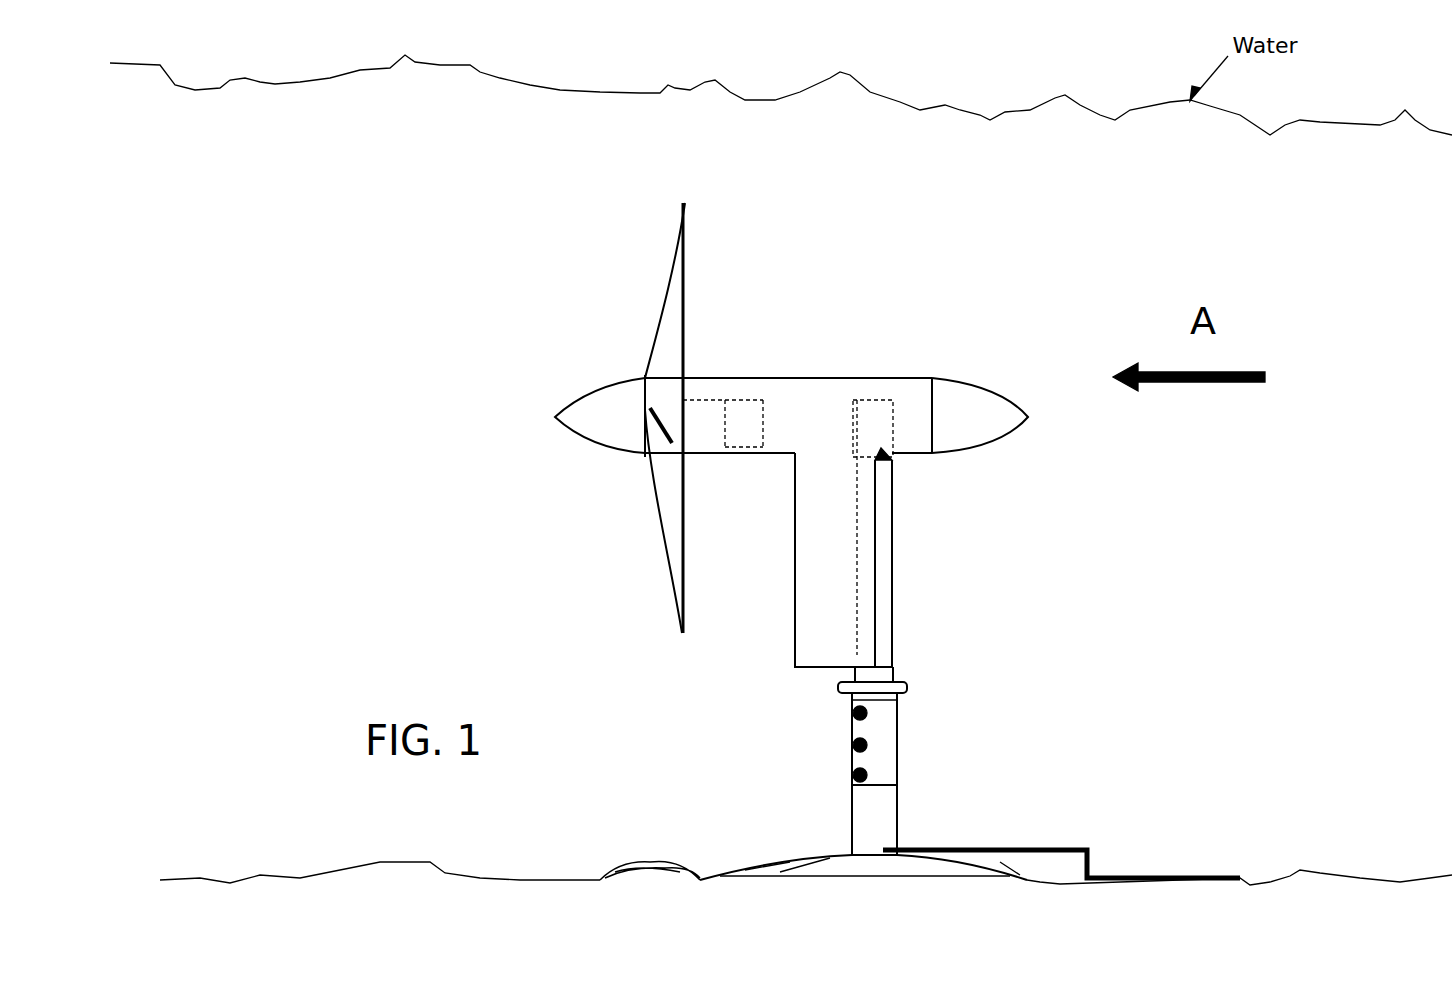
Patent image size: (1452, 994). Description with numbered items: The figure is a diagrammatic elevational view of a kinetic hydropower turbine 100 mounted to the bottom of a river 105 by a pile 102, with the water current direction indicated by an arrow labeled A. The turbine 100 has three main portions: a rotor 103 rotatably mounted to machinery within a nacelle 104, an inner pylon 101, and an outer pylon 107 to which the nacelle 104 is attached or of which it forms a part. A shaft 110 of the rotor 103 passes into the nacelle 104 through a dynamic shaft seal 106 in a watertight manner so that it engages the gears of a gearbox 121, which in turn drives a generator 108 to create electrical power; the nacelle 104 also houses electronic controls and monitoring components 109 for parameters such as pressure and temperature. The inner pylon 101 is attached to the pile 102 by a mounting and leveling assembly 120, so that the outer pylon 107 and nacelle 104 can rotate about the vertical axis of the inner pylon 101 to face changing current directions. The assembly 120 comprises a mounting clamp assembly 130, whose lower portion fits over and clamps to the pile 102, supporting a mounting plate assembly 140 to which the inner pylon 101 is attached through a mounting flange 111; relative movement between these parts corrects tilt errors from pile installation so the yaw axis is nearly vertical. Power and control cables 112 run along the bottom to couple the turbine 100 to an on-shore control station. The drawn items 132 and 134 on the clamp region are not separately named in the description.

The KHP turbine 100 is at (897, 233).
The inner pylon 101 is at (870, 592).
The pile 102 is at (870, 823).
The rotor 103 is at (655, 320).
The nacelle 104 is at (880, 375).
The river 105 is at (652, 860).
The dynamic shaft seal 106 is at (612, 378).
The outer pylon 107 is at (820, 577).
The generator 108 is at (753, 437).
The electronic controls and monitoring components 109 is at (886, 456).
The shaft 110 is at (680, 458).
The mounting flange 111 is at (893, 680).
The power and control cables 112 is at (1087, 852).
The mounting and leveling assembly 120 is at (955, 693).
The gearbox 121 is at (724, 400).
The mounting clamp assembly 130 is at (897, 718).
The upper pole section 132 is at (880, 757).
The bearings 134 is at (855, 732).
The mounting plate assembly 140 is at (830, 690).